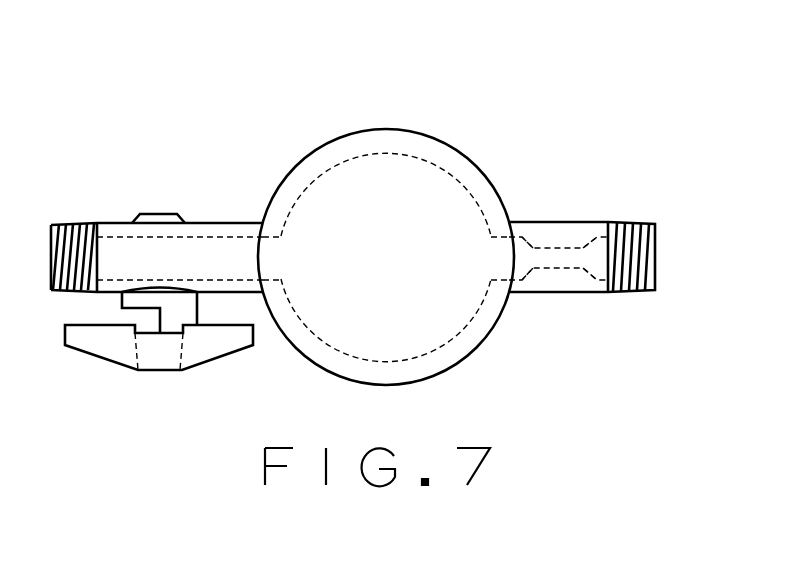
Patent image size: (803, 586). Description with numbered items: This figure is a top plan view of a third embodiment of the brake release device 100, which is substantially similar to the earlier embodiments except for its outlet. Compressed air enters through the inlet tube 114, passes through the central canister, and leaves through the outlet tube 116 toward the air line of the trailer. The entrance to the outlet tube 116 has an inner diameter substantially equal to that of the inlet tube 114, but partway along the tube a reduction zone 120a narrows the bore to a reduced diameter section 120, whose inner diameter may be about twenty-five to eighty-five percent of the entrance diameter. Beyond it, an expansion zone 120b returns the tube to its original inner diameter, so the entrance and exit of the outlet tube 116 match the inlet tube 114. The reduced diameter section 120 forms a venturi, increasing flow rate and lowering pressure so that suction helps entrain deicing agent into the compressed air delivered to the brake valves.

The brake release device 100 is at (465, 136).
The inlet tube 114 is at (228, 222).
The outlet tube 116 is at (562, 213).
The reduced diameter section 120 is at (558, 268).
The reduction zone 120a is at (522, 273).
The expansion zone 120b is at (592, 274).